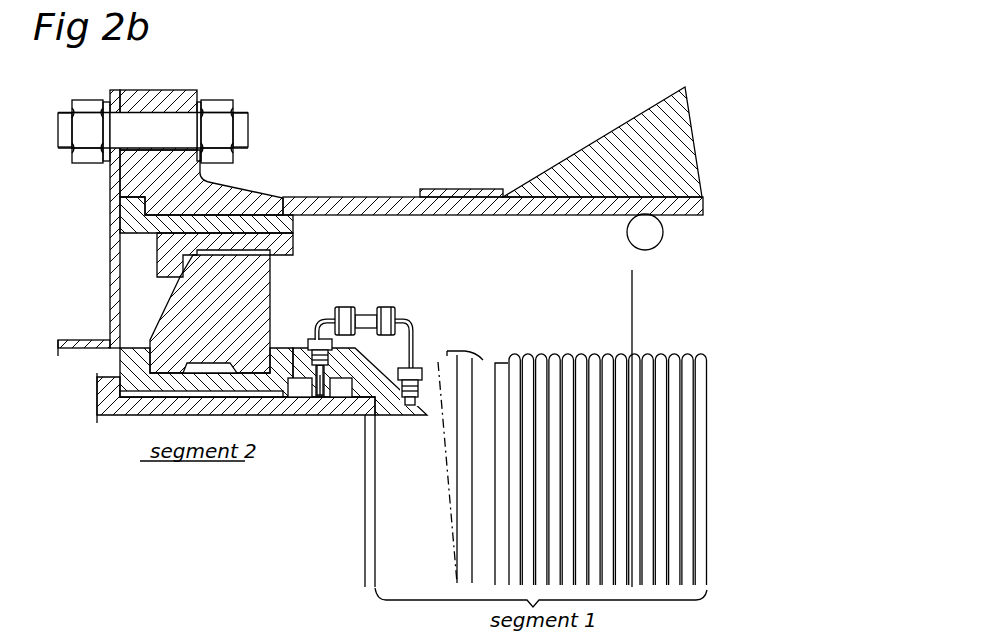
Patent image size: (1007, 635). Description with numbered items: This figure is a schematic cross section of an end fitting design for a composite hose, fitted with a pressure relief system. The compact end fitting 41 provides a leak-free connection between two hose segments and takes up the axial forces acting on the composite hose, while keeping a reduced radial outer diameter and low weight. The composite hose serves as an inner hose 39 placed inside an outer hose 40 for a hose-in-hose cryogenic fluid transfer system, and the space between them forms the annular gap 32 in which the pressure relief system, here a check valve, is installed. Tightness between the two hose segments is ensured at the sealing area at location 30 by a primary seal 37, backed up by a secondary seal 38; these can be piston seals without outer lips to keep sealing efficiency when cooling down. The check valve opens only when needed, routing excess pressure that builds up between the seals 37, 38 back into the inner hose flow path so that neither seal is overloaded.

The sealing area location 30 is at (321, 400).
The annular gap 32 is at (529, 290).
The primary seal 37 is at (303, 396).
The secondary seal 38 is at (343, 398).
The inner hose 39 is at (678, 337).
The outer hose 40 is at (557, 181).
The end fitting 41 is at (256, 88).